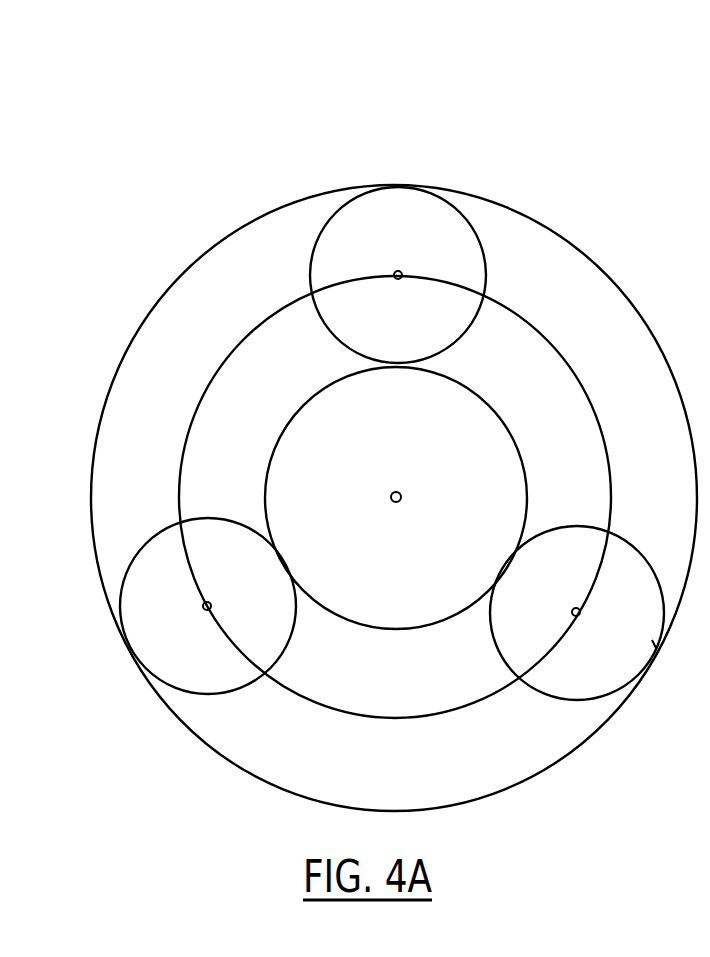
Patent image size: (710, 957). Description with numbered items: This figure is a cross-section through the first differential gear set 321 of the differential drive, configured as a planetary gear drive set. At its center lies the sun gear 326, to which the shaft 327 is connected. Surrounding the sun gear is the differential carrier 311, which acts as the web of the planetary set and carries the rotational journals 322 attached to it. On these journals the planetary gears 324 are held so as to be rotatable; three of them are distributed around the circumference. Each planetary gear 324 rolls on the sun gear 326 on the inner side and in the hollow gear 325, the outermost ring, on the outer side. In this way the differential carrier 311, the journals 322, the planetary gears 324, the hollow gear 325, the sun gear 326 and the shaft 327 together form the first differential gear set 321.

The first differential gear set 321 is at (481, 113).
The rotational journals 322 is at (397, 270).
The planetary gears 324 is at (338, 205).
The differential carrier 311 is at (510, 308).
The hollow gear 325 is at (594, 260).
The sun gear 326 is at (475, 395).
The shaft 327 is at (399, 504).